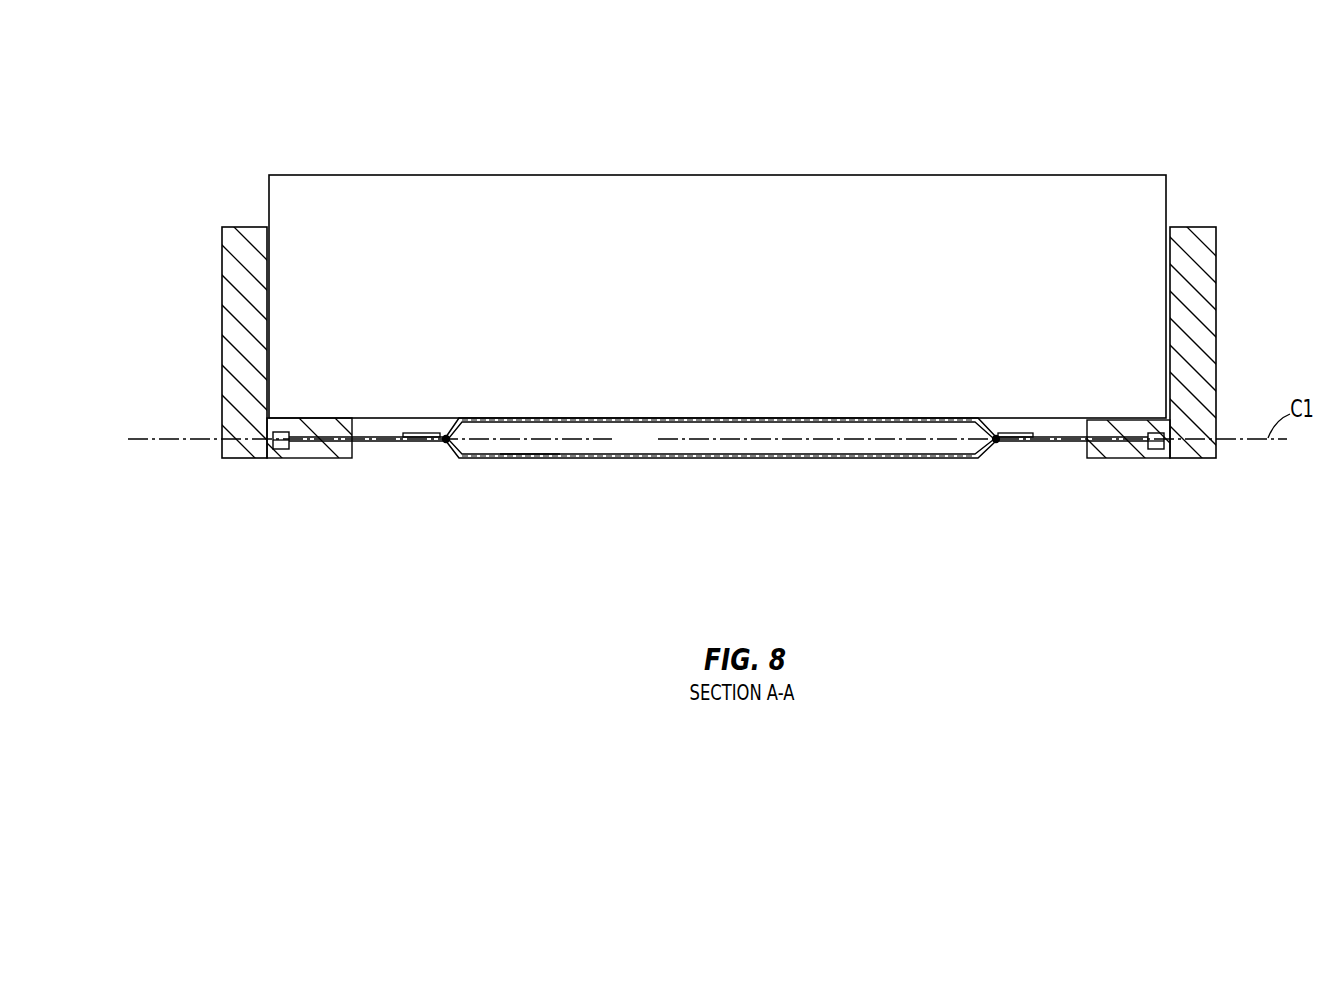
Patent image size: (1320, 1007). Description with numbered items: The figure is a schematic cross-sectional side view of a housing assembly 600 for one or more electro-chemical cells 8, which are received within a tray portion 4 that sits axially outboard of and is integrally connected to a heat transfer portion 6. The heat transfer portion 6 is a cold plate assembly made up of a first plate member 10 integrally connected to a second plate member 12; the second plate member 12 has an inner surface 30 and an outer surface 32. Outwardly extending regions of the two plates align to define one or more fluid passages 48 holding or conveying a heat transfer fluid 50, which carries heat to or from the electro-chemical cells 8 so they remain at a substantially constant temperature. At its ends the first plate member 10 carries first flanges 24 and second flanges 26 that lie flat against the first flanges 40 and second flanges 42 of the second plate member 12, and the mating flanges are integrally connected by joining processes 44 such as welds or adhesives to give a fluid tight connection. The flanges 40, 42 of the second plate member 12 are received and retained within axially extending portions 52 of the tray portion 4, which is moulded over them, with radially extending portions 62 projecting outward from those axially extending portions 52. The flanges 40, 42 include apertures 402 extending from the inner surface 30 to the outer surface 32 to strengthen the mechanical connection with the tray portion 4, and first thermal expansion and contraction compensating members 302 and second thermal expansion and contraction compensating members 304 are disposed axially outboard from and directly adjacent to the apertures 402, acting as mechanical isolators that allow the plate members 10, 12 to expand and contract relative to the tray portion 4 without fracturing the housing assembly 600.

The housing assembly 600 is at (1181, 86).
The electro-chemical cells 8 is at (706, 224).
The tray portion 4 is at (1200, 258).
The radially extending portions 62 is at (230, 298).
The first thermal expansion and contraction compensating members 302 is at (283, 431).
The second thermal expansion and contraction compensating members 304 is at (280, 450).
The apertures 402 is at (300, 437).
The axially extending portions 52 is at (302, 456).
The first flanges 40 is at (382, 437).
The second flanges 42 is at (1048, 437).
The first flanges 24 is at (408, 432).
The second flanges 26 is at (1007, 433).
The joining processes 44 is at (448, 436).
The first plate member 10 is at (688, 418).
The second plate member 12 is at (548, 458).
The inner surface 30 is at (487, 458).
The outer surface 32 is at (512, 458).
The fluid passages 48 is at (593, 456).
The heat transfer fluid 50 is at (622, 449).
The heat transfer portion 6 is at (712, 539).